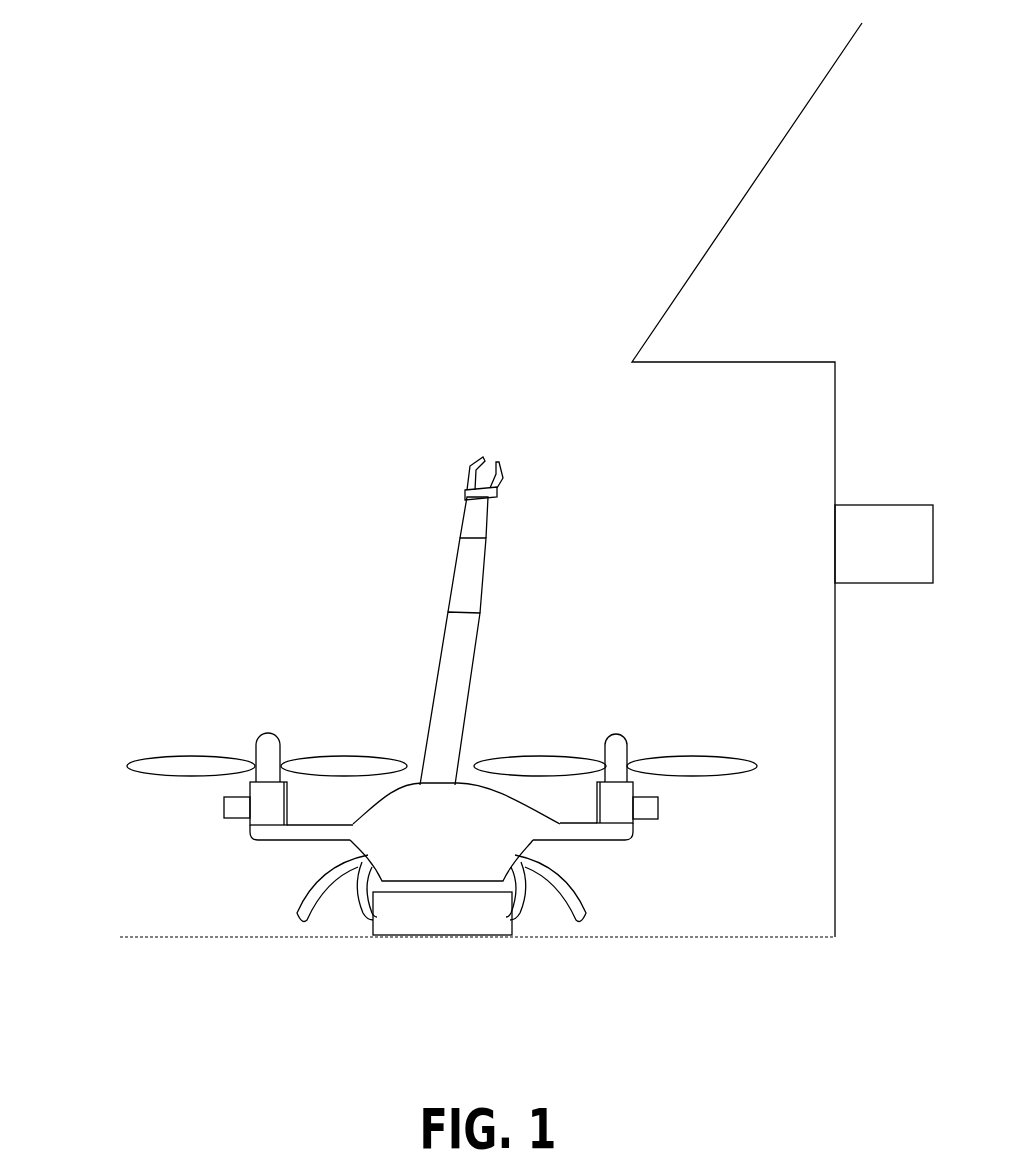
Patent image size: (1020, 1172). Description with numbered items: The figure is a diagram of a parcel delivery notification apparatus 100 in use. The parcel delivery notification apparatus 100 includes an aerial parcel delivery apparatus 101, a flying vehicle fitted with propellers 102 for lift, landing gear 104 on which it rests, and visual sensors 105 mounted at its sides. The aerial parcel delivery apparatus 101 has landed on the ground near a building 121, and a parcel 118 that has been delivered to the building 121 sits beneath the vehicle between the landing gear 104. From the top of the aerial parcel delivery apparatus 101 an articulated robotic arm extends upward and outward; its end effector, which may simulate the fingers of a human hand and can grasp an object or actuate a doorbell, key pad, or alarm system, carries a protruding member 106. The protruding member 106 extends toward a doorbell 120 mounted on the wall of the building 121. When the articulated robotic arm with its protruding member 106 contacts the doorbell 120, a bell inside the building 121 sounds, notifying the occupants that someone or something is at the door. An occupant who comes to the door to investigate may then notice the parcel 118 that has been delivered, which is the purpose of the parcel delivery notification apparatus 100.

The parcel delivery notification apparatus 100 is at (178, 432).
The aerial parcel delivery apparatus 101 is at (413, 848).
The propellers 102 is at (207, 722).
The landing gear 104 is at (318, 917).
The visual sensors 105 is at (224, 804).
The protruding member 106 is at (440, 655).
The parcel 118 is at (415, 928).
The doorbell 120 is at (912, 561).
The building 121 is at (885, 702).